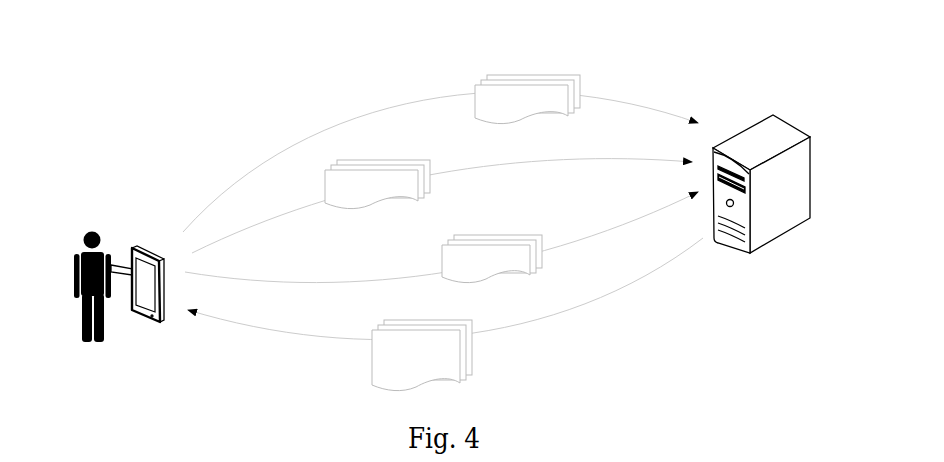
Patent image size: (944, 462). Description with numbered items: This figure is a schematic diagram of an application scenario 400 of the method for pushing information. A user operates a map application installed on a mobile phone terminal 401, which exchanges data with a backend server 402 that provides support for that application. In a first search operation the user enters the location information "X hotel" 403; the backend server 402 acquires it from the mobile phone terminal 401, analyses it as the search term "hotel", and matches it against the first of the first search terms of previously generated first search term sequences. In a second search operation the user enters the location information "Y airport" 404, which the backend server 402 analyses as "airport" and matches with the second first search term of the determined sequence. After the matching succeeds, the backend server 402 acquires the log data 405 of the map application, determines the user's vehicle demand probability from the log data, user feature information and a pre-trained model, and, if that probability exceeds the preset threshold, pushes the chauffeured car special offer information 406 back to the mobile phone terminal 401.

The information processing system 400 is at (768, 51).
The mobile phone terminal 401 is at (133, 248).
The backend server 402 is at (795, 127).
The location information "X hotel" 403 is at (580, 82).
The location information "Y airport" 404 is at (428, 162).
The log data 405 is at (513, 230).
The chauffeured car special offer information 406 is at (437, 322).